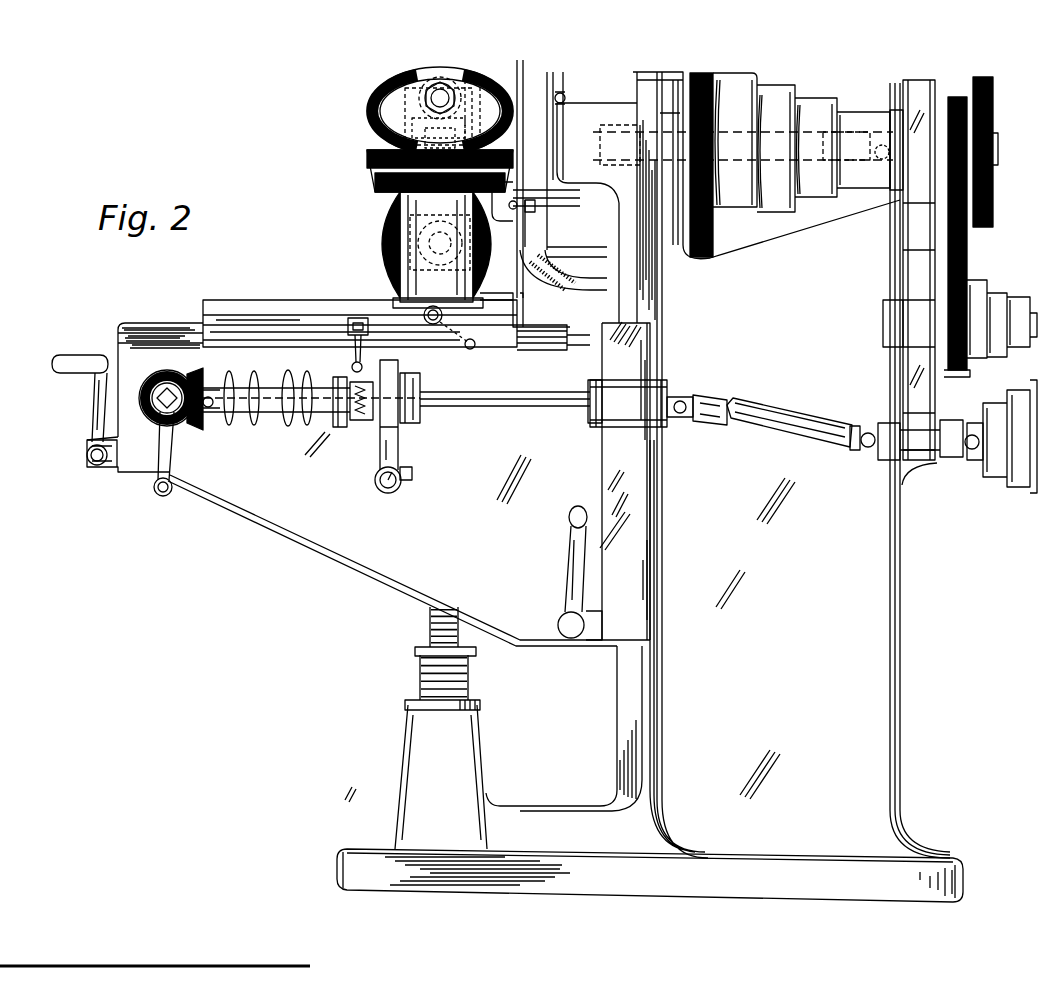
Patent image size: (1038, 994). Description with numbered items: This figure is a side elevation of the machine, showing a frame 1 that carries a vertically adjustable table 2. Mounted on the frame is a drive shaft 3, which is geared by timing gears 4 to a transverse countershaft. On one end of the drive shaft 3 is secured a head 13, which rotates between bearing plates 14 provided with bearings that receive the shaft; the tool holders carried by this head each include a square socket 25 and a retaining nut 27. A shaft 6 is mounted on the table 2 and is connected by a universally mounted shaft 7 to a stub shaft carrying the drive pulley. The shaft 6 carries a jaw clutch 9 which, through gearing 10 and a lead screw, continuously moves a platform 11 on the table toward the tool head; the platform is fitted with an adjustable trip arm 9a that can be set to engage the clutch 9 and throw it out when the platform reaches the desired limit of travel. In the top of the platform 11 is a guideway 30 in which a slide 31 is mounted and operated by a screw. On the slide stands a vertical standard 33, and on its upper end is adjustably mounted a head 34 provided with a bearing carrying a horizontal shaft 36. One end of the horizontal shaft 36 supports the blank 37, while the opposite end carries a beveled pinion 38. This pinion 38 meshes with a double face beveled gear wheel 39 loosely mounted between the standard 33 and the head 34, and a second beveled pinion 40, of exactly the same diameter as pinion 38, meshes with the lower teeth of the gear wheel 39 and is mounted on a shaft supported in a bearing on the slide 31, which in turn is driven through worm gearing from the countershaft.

The frame 1 is at (650, 487).
The vertically adjustable table 2 is at (340, 560).
The drive shaft 3 is at (995, 160).
The timing gears 4 is at (993, 200).
The shaft 6 is at (477, 407).
The universally mounted shaft 7 is at (750, 433).
The jaw clutch 9 is at (360, 427).
The adjustable trip arm 9a is at (352, 366).
The gearing 10 is at (193, 427).
The platform 11 is at (267, 300).
The head 13 is at (557, 207).
The bearing plates 14 is at (557, 229).
The square socket 25 is at (552, 270).
The retaining nut 27 is at (562, 101).
The guideway 30 is at (513, 297).
The slide 31 is at (398, 300).
The vertical standard 33 is at (408, 210).
The head 34 is at (376, 79).
The horizontal shaft 36 is at (433, 91).
The blank 37 is at (387, 96).
The beveled pinion 38 is at (372, 113).
The double face beveled gear wheel 39 is at (378, 185).
The beveled pinion 40 is at (372, 261).